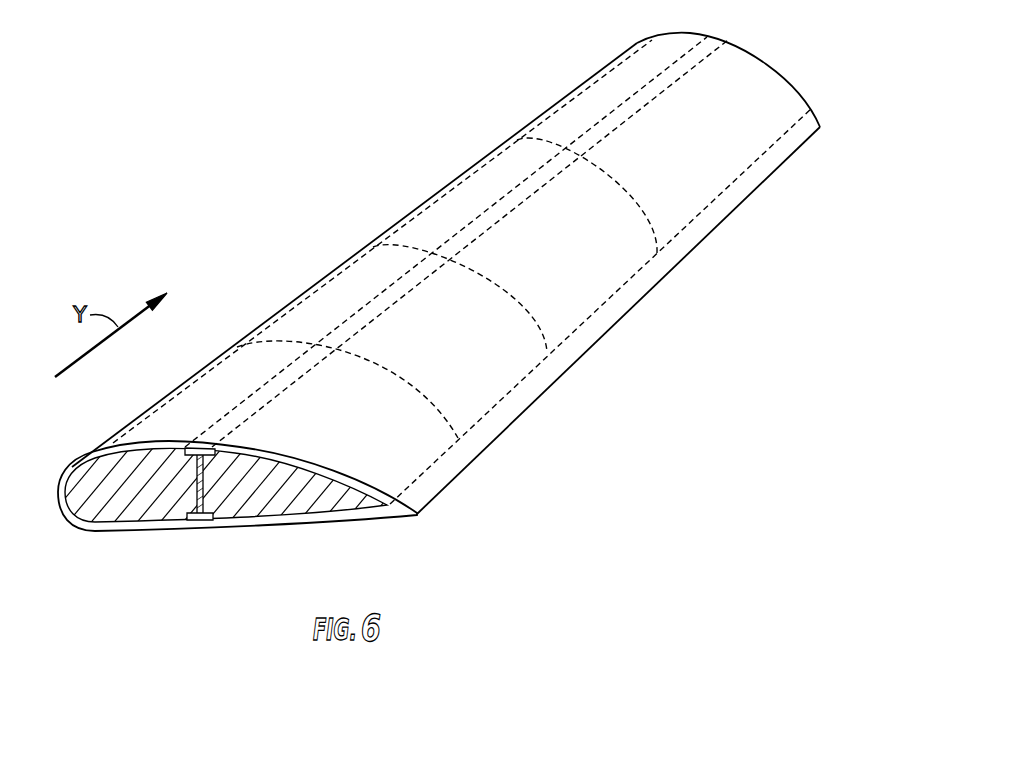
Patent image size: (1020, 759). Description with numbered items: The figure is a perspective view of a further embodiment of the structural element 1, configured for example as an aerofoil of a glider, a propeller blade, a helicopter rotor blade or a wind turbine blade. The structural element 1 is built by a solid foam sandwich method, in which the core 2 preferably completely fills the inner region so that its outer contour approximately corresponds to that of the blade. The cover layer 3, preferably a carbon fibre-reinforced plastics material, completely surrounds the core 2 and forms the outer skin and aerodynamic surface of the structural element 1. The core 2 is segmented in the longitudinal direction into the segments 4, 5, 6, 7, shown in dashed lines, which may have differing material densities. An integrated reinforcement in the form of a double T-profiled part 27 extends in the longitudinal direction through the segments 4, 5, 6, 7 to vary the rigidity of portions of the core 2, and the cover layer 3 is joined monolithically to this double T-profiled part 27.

The structural element 1 is at (203, 122).
The core 2 is at (147, 495).
The cover layer 3 is at (480, 428).
The core segment 4 is at (233, 390).
The core segment 5 is at (348, 297).
The core segment 6 is at (503, 180).
The core segment 7 is at (745, 63).
The double T-profiled part 27 is at (197, 520).